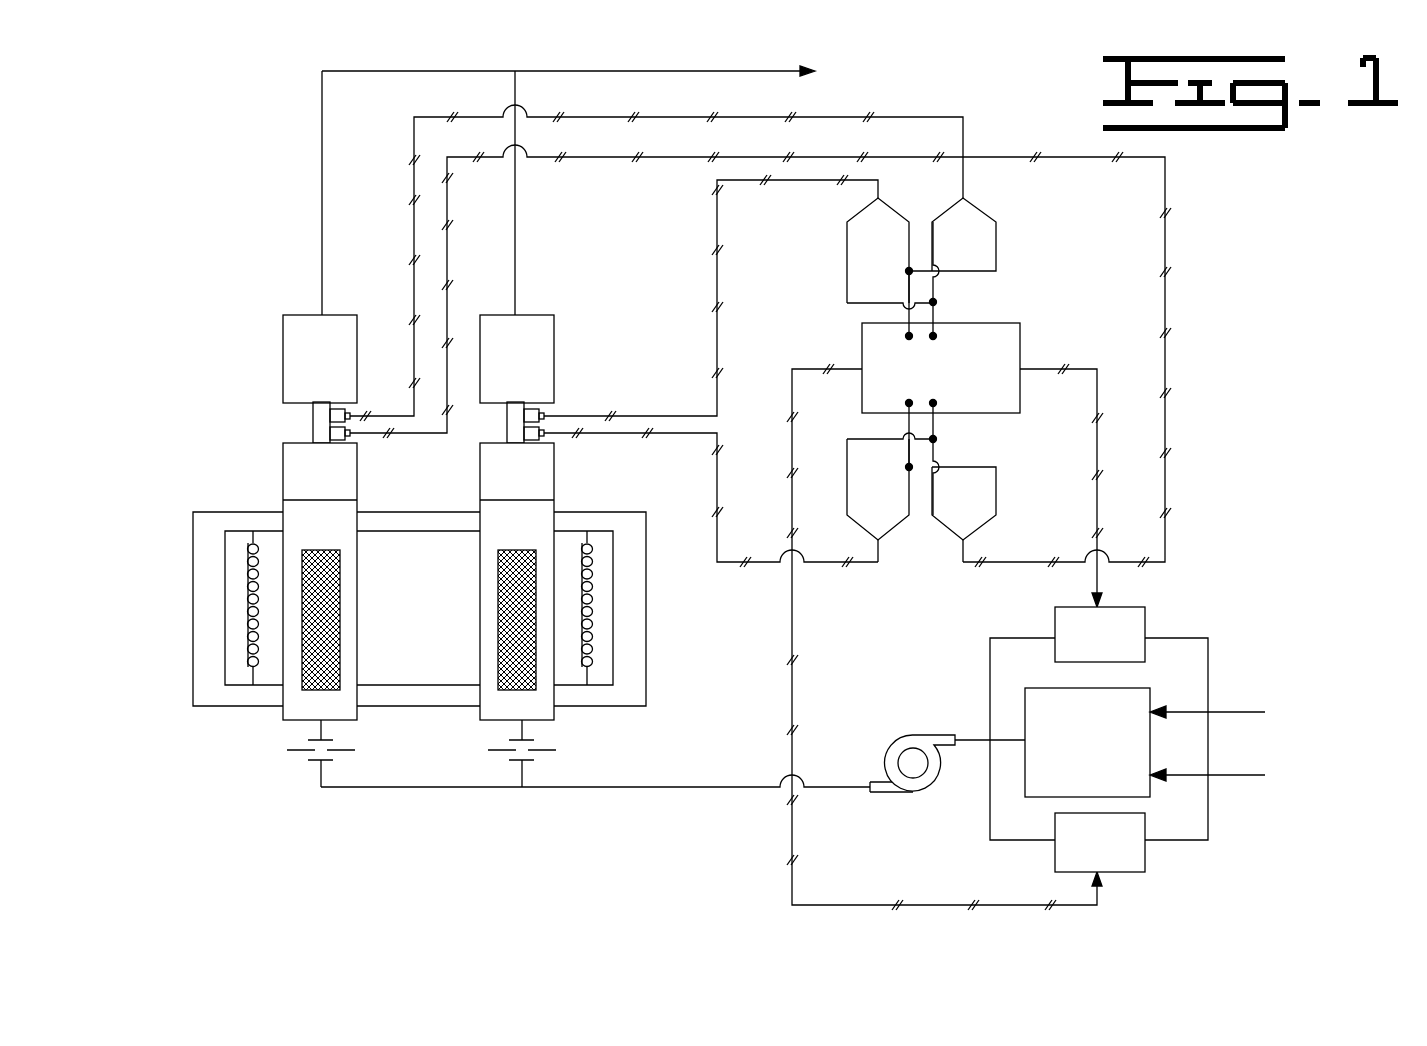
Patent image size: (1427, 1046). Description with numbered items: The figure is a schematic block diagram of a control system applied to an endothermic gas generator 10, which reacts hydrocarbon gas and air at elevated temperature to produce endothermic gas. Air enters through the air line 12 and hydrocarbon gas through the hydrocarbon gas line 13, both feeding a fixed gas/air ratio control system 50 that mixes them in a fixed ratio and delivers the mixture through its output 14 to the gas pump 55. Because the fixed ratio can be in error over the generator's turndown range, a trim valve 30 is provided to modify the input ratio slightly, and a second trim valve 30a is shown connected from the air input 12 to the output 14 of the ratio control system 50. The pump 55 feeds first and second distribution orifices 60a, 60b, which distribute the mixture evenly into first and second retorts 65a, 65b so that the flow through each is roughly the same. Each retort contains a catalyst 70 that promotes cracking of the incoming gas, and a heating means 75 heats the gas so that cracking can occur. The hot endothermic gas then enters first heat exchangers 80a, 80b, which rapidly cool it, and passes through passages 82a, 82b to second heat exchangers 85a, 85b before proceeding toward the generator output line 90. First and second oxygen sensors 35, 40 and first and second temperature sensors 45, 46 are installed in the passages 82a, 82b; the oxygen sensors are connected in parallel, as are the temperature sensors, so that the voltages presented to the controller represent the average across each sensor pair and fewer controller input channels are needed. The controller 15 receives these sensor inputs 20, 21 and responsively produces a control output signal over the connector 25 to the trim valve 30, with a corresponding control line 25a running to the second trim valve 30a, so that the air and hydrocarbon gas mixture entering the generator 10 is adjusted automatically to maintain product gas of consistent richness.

The endothermic gas generator 10 is at (200, 852).
The air line 12 is at (1240, 775).
The hydrocarbon gas line 13 is at (1240, 712).
The output of the air/gas ratio control system 14 is at (978, 740).
The controller 15 is at (1020, 357).
The sensor input 20 is at (933, 312).
The sensor input 21 is at (933, 428).
The connector 25 is at (1097, 436).
The control signal line to trim valve 25a is at (795, 690).
The trim valve 30 is at (1147, 615).
The second trim valve 30a is at (1055, 850).
The first oxygen sensor 35 is at (350, 410).
The second oxygen sensor 40 is at (553, 412).
The first temperature sensor 45 is at (352, 440).
The second temperature sensor 46 is at (555, 440).
The gas/air ratio control system 50 is at (1150, 697).
The gas pump 55 is at (910, 735).
The first distribution orifice 60a is at (303, 750).
The second distribution orifice 60b is at (500, 750).
The first retort 65a is at (283, 517).
The second retort 65b is at (557, 672).
The catalyst 70 is at (300, 685).
The heating means 75 is at (245, 608).
The first heat exchanger 80a is at (283, 453).
The first heat exchanger 80b is at (555, 488).
The passage 82a is at (312, 408).
The passage 82b is at (507, 412).
The second heat exchanger 85a is at (283, 326).
The second heat exchanger 85b is at (555, 326).
The endothermic gas output line 90 is at (322, 88).